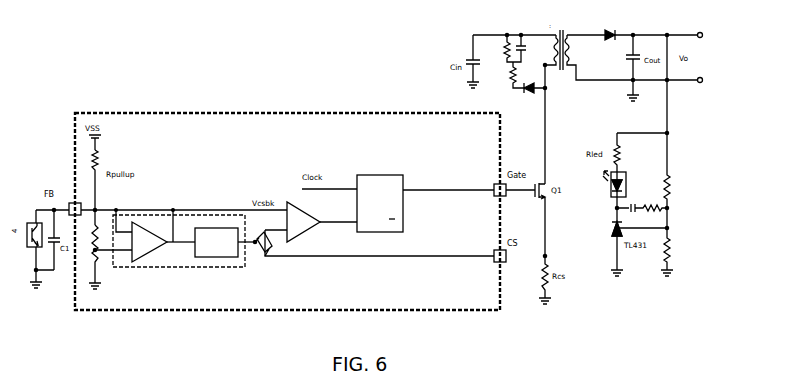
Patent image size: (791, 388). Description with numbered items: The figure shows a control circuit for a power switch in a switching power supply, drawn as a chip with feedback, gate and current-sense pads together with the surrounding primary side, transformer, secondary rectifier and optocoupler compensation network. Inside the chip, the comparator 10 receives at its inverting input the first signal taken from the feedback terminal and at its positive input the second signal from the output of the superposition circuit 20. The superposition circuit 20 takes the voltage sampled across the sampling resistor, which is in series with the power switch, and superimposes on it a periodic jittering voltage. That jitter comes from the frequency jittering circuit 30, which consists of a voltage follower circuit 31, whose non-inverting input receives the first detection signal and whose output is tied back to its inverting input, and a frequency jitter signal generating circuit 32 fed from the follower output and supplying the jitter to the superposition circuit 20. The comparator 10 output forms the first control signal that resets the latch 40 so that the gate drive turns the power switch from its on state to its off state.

The comparator 10 is at (312, 237).
The superposition circuit 20 is at (259, 256).
The frequency jittering circuit 30 is at (177, 214).
The voltage follower circuit 31 is at (148, 267).
The frequency jitter signal generating circuit 32 is at (218, 267).
The SR latch 40 is at (389, 175).